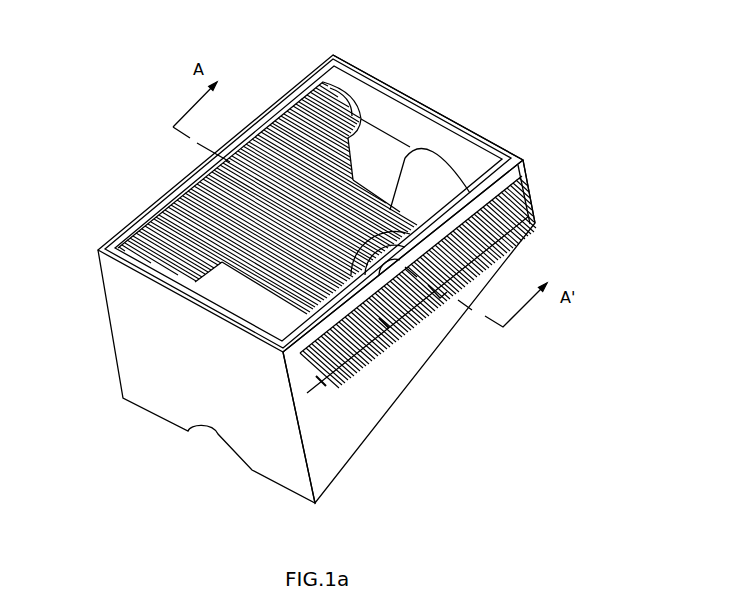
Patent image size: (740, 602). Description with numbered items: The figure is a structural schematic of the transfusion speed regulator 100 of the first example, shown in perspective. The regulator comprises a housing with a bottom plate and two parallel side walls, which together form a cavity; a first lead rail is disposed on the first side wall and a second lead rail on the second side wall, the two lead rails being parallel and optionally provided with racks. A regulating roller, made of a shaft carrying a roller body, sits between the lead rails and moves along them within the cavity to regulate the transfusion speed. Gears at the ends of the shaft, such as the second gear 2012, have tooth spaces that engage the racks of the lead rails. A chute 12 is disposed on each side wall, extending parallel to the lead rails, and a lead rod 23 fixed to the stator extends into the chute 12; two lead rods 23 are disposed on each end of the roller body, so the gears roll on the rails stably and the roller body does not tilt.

The transfusion speed regulator 100 is at (76, 20).
The lead rod 23 is at (258, 152).
The second gear 2012 is at (230, 174).
The chute 12 is at (383, 322).